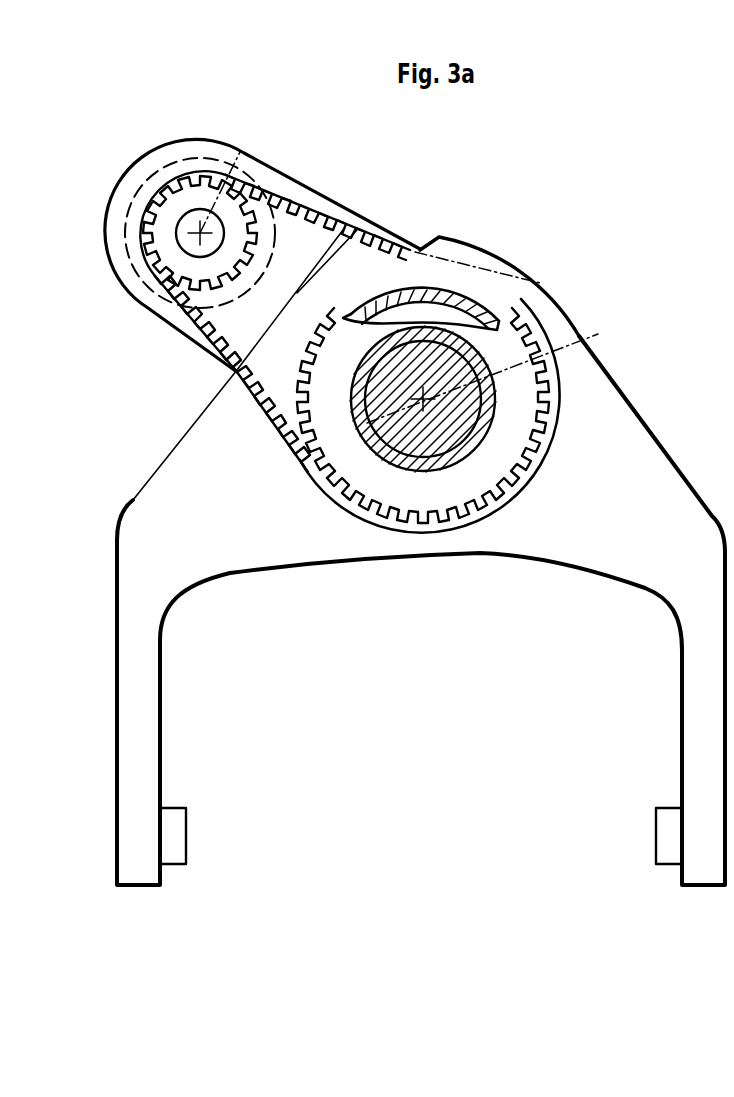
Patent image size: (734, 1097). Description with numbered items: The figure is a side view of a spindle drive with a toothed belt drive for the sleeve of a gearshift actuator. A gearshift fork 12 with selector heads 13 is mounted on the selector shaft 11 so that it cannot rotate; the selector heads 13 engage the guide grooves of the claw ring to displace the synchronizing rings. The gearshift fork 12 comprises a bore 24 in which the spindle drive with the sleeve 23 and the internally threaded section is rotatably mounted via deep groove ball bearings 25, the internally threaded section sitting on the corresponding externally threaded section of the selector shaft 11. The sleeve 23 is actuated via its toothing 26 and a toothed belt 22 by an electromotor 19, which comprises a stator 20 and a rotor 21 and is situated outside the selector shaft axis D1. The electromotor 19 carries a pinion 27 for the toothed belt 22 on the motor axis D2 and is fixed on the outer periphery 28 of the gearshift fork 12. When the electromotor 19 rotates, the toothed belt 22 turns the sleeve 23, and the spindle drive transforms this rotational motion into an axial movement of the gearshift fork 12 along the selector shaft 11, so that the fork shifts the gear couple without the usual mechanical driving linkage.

The selector shaft 11 is at (421, 474).
The gearshift fork 12 is at (682, 700).
The selector heads 13 is at (190, 838).
The electromotor 19 is at (142, 156).
The stator 20 is at (122, 204).
The rotor 21 is at (130, 244).
The toothed belt 22 is at (250, 397).
The sleeve 23 is at (408, 312).
The bore 24 is at (453, 286).
The deep groove ball bearings 25 is at (474, 300).
The toothing 26 is at (551, 302).
The pinion 27 is at (172, 284).
The outer periphery 28 is at (371, 234).
The selector shaft axis D1 is at (502, 370).
The motor axis D2 is at (240, 152).